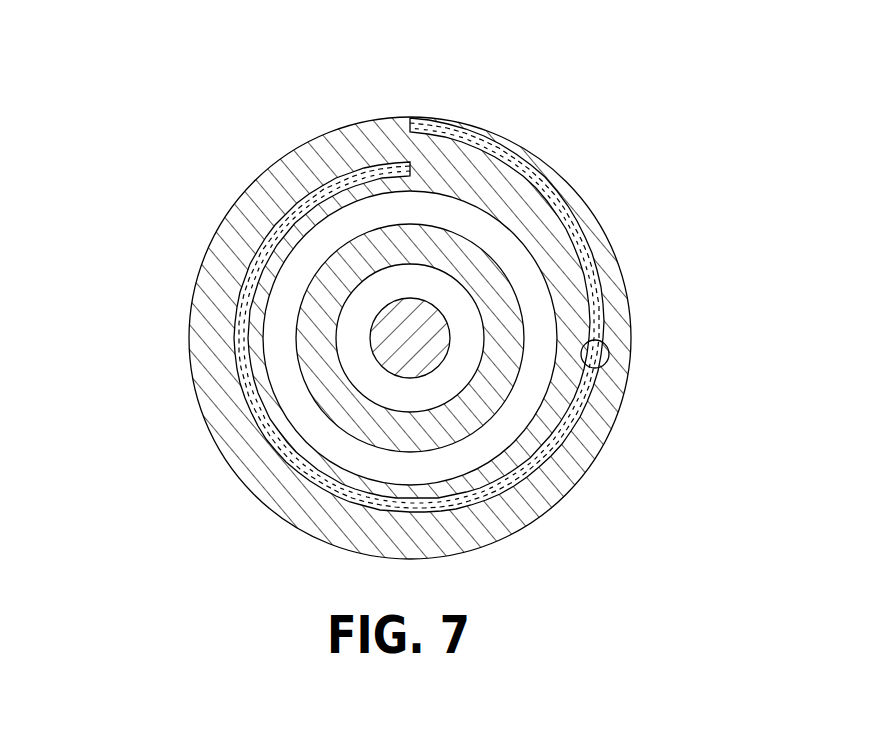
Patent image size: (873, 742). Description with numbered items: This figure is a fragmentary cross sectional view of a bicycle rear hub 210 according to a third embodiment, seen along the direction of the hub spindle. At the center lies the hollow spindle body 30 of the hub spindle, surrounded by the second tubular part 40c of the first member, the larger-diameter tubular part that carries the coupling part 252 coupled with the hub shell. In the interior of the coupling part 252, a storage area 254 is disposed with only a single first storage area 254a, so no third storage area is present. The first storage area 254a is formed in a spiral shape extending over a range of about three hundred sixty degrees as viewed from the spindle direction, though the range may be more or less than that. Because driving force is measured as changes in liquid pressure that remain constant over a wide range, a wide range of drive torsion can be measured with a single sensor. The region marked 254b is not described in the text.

The rear hub 210 is at (411, 295).
The coupling part 252 is at (344, 327).
The storage area 254 is at (499, 301).
The first storage area 254a is at (552, 183).
The tape backing 254b is at (609, 352).
The spindle body 30 is at (297, 288).
The second tubular part 40c is at (190, 318).